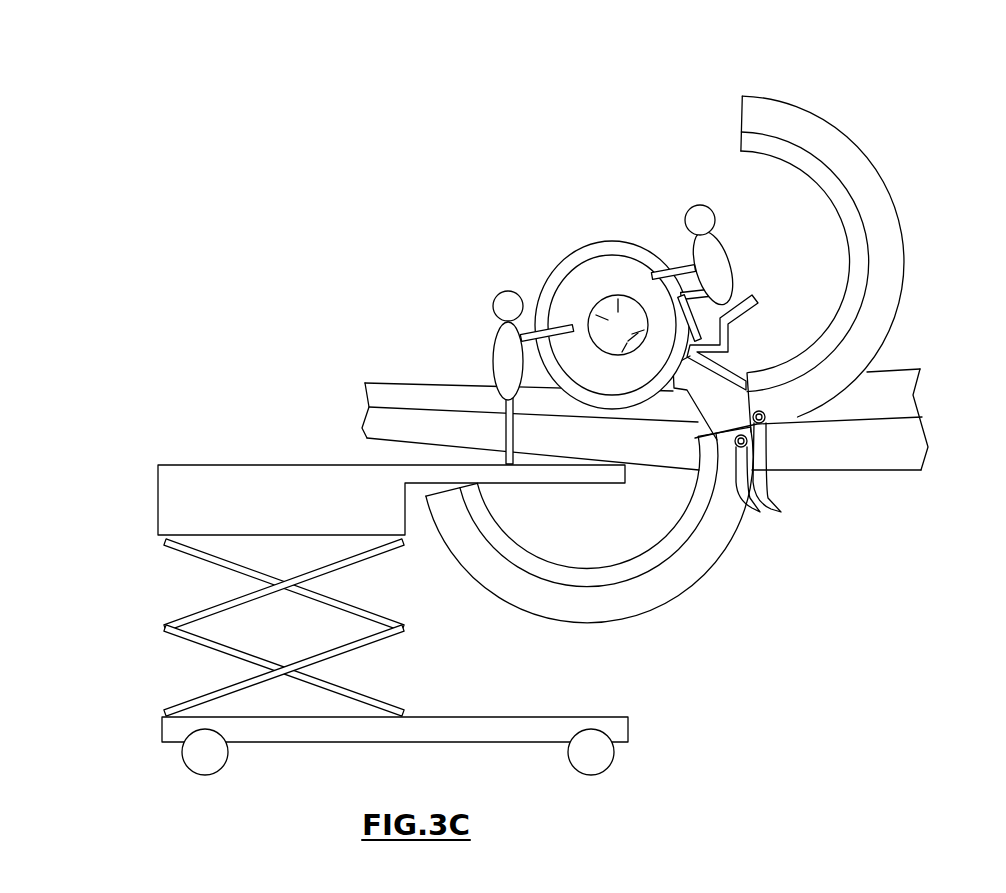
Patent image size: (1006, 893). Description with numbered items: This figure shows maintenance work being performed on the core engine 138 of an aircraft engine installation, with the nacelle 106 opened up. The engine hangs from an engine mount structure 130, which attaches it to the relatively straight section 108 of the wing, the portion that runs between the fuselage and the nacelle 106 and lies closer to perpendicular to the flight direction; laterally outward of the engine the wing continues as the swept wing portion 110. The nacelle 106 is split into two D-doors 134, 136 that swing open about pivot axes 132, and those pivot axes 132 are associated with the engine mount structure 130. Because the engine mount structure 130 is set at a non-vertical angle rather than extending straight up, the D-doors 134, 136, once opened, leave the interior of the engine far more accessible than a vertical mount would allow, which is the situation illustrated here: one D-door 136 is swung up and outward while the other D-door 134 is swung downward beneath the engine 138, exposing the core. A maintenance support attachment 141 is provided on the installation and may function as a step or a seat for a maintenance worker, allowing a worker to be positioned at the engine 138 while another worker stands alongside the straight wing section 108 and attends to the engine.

The nacelle 106 is at (869, 241).
The relatively straight section 108 is at (855, 458).
The swept wing portion 110 is at (403, 395).
The engine mount structure 130 is at (688, 392).
The pivot axes 132 is at (776, 511).
The D-door 134 is at (538, 610).
The D-door 136 is at (897, 287).
The core engine 138 is at (598, 300).
The maintenance support attachment 141 is at (745, 296).